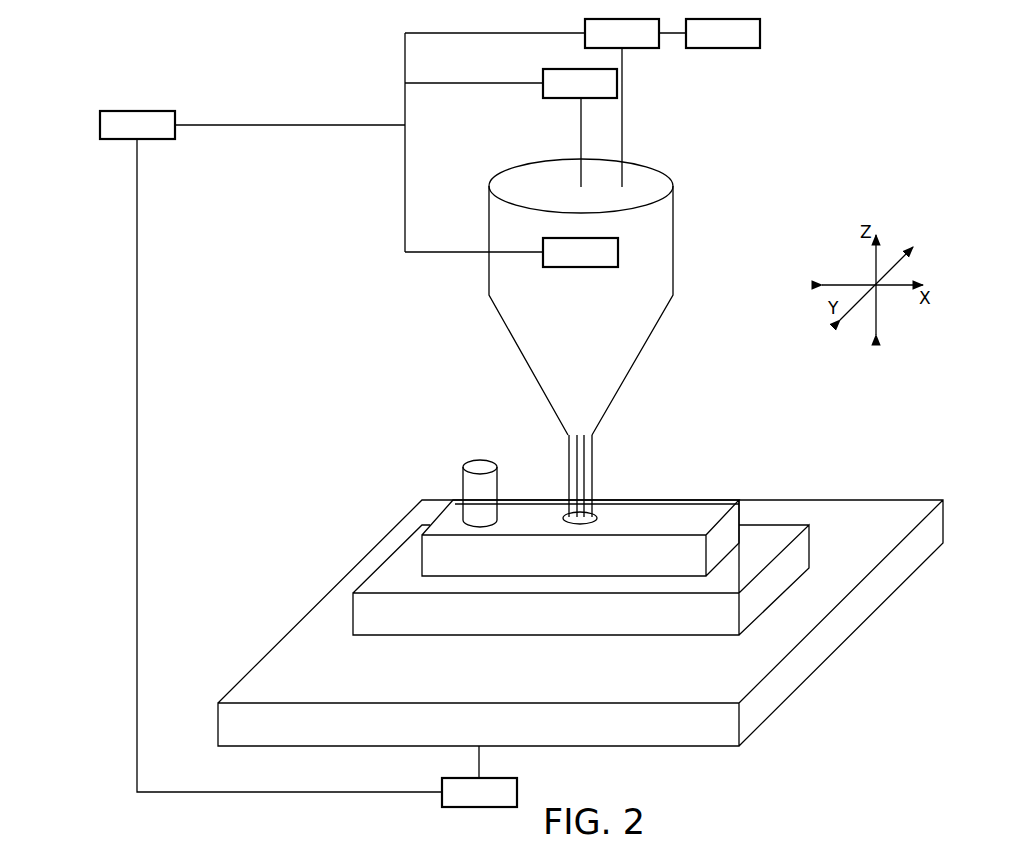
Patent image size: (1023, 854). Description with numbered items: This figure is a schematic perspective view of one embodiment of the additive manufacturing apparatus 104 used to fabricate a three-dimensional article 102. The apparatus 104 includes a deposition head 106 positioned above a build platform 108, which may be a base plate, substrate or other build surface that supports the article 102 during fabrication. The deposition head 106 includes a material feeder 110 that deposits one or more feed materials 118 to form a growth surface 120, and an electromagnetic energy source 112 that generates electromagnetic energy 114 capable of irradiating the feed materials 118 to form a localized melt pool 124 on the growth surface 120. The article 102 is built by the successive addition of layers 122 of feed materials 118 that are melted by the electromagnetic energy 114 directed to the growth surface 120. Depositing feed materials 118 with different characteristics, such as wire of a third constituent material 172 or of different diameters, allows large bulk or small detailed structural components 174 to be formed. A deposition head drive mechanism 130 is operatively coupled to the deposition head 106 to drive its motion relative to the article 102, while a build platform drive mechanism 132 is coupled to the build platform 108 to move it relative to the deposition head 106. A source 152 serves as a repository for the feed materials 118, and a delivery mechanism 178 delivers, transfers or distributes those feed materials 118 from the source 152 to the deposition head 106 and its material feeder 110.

The article 102 is at (298, 544).
The additive manufacturing apparatus 104 is at (338, 359).
The deposition head 106 is at (704, 221).
The build platform 108 is at (943, 520).
The material feeder 110 is at (673, 290).
The electromagnetic energy source 112 is at (564, 264).
The electromagnetic energy 114 is at (574, 475).
The feed materials 118 is at (593, 461).
The growth surface 120 is at (693, 516).
The layers 122 is at (740, 500).
The melt pool 124 is at (598, 517).
The deposition head drive mechanism 130 is at (564, 95).
The build platform drive mechanism 132 is at (463, 804).
The source 152 is at (707, 45).
The third constituent material 172 is at (121, 136).
The structural component 174 is at (463, 482).
The delivery mechanism 178 is at (606, 45).